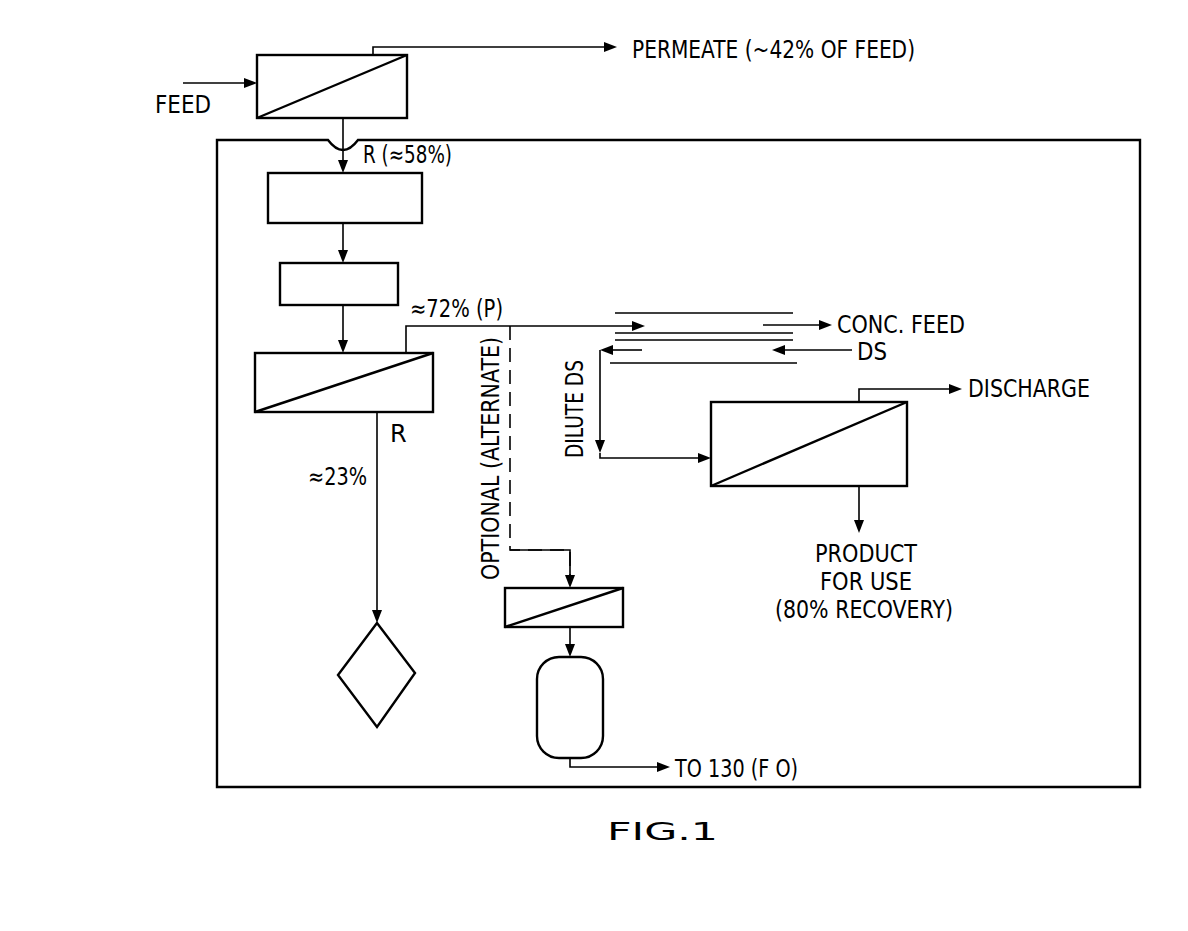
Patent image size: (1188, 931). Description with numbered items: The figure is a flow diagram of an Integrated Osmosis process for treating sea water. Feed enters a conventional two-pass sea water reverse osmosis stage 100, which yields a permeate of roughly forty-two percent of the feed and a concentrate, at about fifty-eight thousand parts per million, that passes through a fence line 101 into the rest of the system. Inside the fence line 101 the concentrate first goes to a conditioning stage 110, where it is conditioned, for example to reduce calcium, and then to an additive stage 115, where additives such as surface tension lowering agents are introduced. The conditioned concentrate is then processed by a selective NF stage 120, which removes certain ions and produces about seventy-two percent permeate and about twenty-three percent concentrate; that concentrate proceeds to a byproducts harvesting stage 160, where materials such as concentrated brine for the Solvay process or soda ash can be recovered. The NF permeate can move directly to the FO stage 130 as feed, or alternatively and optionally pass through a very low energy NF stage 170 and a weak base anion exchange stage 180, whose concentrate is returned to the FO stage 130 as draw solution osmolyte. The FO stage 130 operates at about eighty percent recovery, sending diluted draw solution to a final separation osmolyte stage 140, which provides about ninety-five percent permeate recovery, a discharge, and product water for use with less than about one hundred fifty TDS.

The sea water reverse osmosis stage 100 is at (407, 83).
The fence line 101 is at (990, 140).
The conditioning stage 110 is at (422, 195).
The additive stage 115 is at (398, 280).
The selective NF stage 120 is at (283, 412).
The FO stage 130 is at (693, 365).
The final separation osmolyte stage 140 is at (907, 455).
The byproducts harvesting stage 160 is at (345, 662).
The very low energy NF stage 170 is at (623, 603).
The weak base anion exchange stage 180 is at (603, 710).